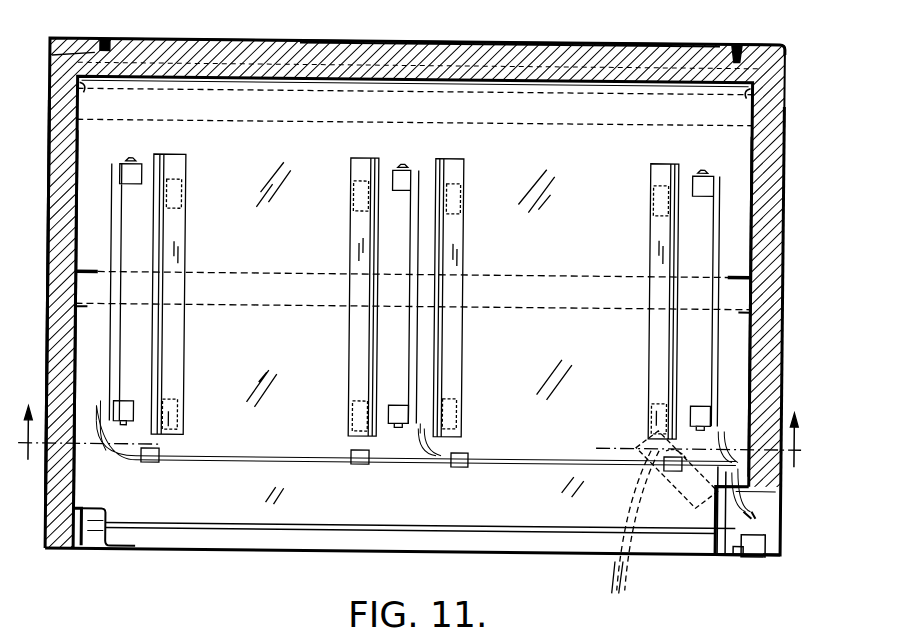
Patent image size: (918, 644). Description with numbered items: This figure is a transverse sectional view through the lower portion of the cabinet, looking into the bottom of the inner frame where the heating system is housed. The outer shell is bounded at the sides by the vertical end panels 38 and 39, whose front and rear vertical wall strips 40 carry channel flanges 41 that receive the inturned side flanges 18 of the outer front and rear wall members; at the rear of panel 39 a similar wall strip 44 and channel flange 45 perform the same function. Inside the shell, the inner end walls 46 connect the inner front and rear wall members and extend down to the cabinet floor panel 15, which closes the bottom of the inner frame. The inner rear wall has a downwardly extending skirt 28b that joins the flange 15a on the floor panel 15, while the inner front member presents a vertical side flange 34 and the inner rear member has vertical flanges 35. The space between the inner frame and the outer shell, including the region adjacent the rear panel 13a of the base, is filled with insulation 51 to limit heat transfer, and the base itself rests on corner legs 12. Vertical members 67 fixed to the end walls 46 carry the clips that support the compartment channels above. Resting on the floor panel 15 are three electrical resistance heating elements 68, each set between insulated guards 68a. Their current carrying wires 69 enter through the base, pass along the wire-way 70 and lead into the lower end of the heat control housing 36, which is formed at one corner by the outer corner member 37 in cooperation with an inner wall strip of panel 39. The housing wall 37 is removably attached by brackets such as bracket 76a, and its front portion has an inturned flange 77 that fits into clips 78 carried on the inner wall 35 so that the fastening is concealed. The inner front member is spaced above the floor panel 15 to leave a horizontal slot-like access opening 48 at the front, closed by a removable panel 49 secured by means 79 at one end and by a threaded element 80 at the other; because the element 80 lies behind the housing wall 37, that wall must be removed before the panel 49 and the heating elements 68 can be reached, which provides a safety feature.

The corner legs 12 is at (411, 425).
The rear panel 13a is at (508, 42).
The cabinet floor panel 15 is at (592, 232).
The flange 15a is at (540, 88).
The side flanges 18 is at (104, 40).
The skirt 28b is at (352, 88).
The vertical side flange 34 is at (78, 485).
The vertical flanges 35 is at (84, 96).
The heat control housing 36 is at (768, 556).
The outer corner member 37 is at (786, 530).
The end panel 38 is at (50, 240).
The end panel 39 is at (785, 222).
The vertical wall strips 40 is at (68, 38).
The channel flanges 41 is at (60, 62).
The wall strip 44 is at (762, 38).
The channel flange 45 is at (748, 56).
The inner end walls 46 is at (78, 366).
The access opening 48 is at (465, 522).
The removable panel 49 is at (262, 552).
The insulation 51 is at (222, 52).
The vertical members 67 is at (92, 268).
The heating elements 68 is at (118, 164).
The insulated guards 68a is at (178, 218).
The current carrying wires 69 is at (616, 572).
The wire-way 70 is at (682, 500).
The bracket 76a is at (770, 540).
The inturned flange 77 is at (738, 556).
The clips 78 is at (752, 560).
The securing means 79 is at (114, 512).
The threaded element 80 is at (720, 546).